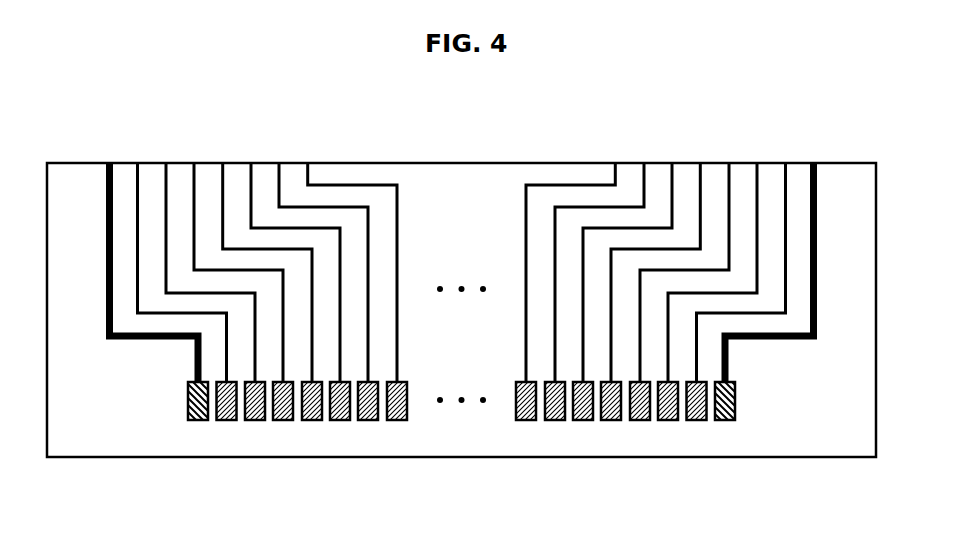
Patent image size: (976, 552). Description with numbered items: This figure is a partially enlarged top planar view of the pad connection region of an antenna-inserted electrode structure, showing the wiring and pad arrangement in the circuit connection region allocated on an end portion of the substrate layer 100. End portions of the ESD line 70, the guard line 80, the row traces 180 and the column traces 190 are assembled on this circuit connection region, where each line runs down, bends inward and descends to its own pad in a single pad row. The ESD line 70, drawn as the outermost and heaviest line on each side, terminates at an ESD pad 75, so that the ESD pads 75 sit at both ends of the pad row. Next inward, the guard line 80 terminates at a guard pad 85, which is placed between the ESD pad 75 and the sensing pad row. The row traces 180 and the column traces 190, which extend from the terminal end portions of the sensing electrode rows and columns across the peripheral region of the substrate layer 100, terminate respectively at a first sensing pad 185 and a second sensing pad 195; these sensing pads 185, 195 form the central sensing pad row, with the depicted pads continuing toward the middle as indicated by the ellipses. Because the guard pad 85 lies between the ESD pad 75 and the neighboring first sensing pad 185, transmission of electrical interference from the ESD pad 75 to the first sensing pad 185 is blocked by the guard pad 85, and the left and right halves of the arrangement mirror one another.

The ESD line 70 is at (97, 178).
The guard line 80 is at (141, 178).
The row trace 180 is at (213, 178).
The column trace 190 is at (365, 178).
The ESD pad 75 is at (200, 420).
The guard pad 85 is at (225, 420).
The first sensing pad 185 is at (277, 420).
The second sensing pad 195 is at (393, 420).
The substrate layer 100 is at (837, 433).